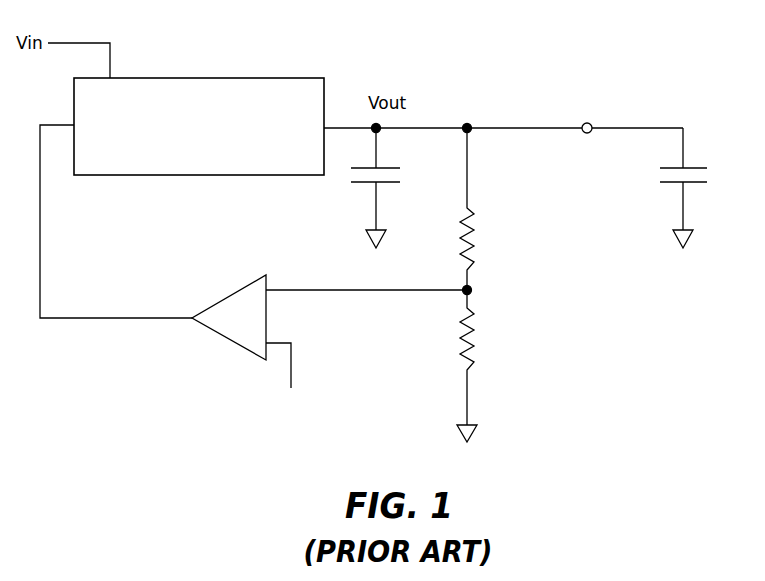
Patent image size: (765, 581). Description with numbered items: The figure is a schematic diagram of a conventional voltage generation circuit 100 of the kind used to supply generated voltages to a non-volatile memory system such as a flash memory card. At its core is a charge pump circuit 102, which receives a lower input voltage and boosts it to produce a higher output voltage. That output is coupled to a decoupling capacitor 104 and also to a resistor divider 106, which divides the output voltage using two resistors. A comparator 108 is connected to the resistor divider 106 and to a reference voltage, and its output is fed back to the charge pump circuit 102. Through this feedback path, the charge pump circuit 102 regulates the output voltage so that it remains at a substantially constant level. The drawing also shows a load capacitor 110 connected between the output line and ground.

The conventional voltage generation circuit 100 is at (487, 58).
The charge pump circuit 102 is at (180, 78).
The decoupling capacitor 104 is at (360, 184).
The resistor divider 106 is at (493, 294).
The comparator 108 is at (220, 338).
The load capacitor Cl 110 is at (690, 166).